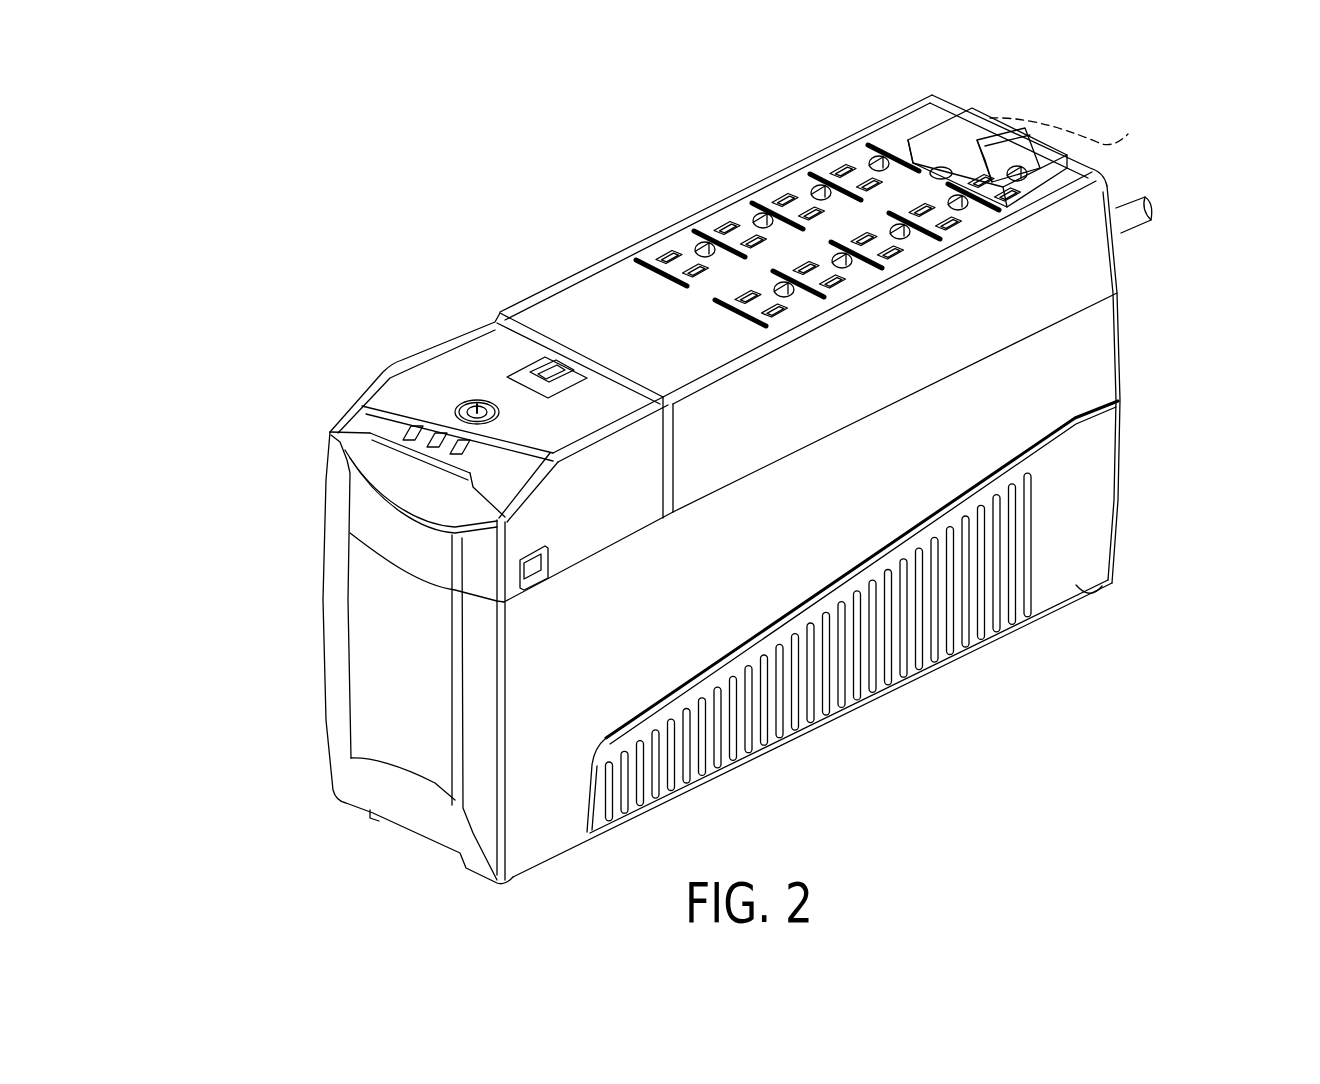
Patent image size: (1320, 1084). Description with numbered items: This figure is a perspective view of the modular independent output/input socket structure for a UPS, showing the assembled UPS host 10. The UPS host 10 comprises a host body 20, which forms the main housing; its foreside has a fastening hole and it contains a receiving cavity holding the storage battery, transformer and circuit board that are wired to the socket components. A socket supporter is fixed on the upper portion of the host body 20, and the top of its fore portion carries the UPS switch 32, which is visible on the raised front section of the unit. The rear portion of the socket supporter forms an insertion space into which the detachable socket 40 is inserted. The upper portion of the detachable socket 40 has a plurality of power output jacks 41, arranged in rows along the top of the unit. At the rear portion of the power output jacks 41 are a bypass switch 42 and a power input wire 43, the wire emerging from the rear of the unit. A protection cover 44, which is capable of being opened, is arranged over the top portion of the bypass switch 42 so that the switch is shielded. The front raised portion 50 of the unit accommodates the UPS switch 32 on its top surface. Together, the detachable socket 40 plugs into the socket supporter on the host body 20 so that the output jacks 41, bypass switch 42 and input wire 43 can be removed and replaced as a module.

The UPS host 10 is at (278, 575).
The host body 20 is at (1119, 450).
The UPS switch 32 is at (480, 400).
The detachable socket 40 is at (675, 176).
The power output jacks 41 is at (793, 200).
The bypass switch 42 is at (1007, 158).
The power input wire 43 is at (1140, 232).
The protection cover 44 is at (1078, 128).
The front control section 50 is at (376, 348).